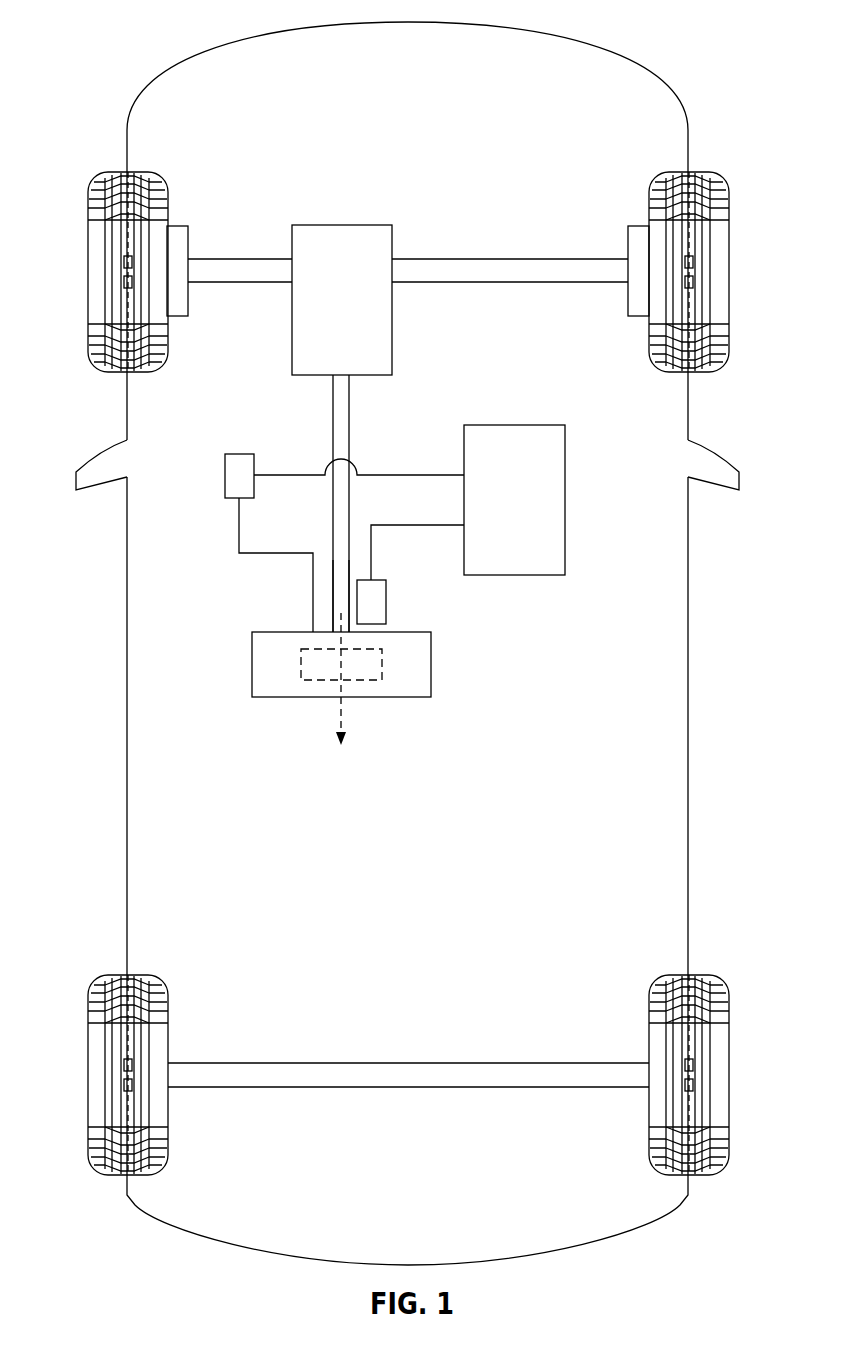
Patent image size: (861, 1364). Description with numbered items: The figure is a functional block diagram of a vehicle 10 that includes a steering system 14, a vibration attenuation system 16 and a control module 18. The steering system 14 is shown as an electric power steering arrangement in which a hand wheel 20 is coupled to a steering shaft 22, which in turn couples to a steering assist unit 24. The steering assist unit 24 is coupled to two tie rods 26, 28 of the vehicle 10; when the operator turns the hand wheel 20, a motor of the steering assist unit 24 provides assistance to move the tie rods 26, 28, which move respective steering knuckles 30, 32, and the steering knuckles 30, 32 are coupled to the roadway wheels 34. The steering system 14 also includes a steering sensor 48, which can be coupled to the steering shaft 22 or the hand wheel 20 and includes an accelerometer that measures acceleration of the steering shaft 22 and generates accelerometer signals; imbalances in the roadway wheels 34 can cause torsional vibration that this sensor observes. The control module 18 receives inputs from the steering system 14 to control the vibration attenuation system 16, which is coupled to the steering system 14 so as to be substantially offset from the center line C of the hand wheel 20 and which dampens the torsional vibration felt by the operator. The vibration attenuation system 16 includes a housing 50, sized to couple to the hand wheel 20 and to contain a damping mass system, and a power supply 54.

The vehicle 10 is at (113, 40).
The steering system 14 is at (208, 520).
The vibration attenuation system 16 is at (278, 602).
The control module 18 is at (532, 425).
The hand wheel 20 is at (232, 660).
The steering shaft 22 is at (350, 431).
The steering assist unit 24 is at (318, 225).
The tie rod 26 is at (265, 259).
The tie rod 28 is at (535, 259).
The steering knuckle 30 is at (176, 226).
The steering knuckle 32 is at (640, 226).
The roadway wheels 34 is at (88, 272).
The steering sensor 48 is at (378, 580).
The housing 50 is at (360, 697).
The power supply 54 is at (229, 454).
The center line C is at (342, 717).